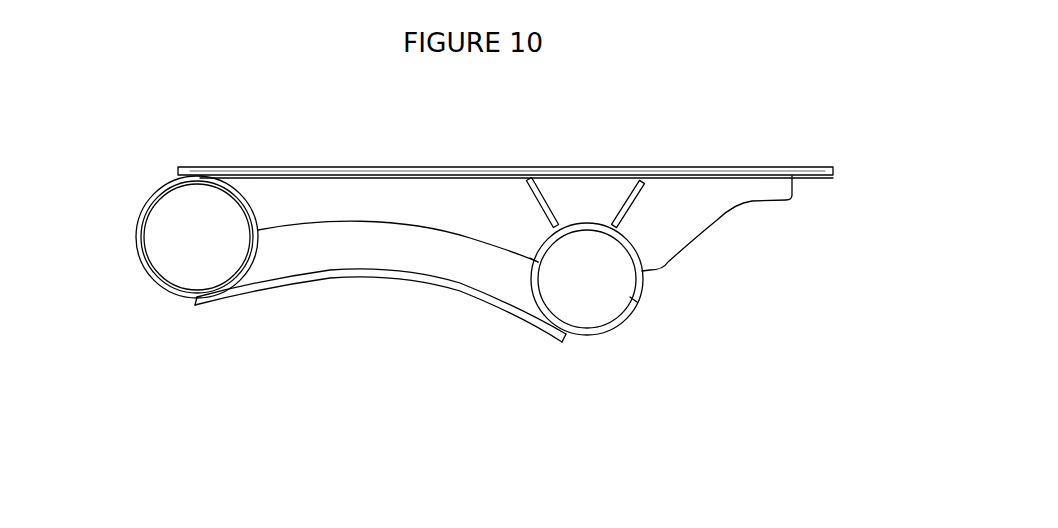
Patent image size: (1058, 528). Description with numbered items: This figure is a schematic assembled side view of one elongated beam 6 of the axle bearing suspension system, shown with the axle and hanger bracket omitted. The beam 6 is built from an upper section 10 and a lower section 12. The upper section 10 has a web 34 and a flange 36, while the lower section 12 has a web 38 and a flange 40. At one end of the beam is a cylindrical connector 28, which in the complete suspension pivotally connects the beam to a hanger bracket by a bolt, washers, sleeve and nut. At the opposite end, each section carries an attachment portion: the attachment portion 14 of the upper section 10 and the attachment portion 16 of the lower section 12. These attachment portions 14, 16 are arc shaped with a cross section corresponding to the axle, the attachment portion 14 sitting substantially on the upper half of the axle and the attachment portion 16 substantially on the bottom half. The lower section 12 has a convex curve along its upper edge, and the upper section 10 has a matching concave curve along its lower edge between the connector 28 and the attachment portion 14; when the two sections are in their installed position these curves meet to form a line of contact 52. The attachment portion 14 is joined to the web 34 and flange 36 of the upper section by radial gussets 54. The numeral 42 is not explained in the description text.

The elongated beam 6 is at (693, 87).
The upper section 10 is at (680, 200).
The lower section 12 is at (430, 262).
The attachment portion 14 is at (640, 285).
The attachment portion 16 is at (612, 328).
The cylindrical connector 28 is at (150, 198).
The web 34 is at (270, 183).
The flange 36 is at (343, 172).
The web 38 is at (313, 260).
The flange 40 is at (248, 292).
The joint 42 is at (537, 260).
The line of contact 52 is at (400, 220).
The radial gussets 54 is at (623, 203).